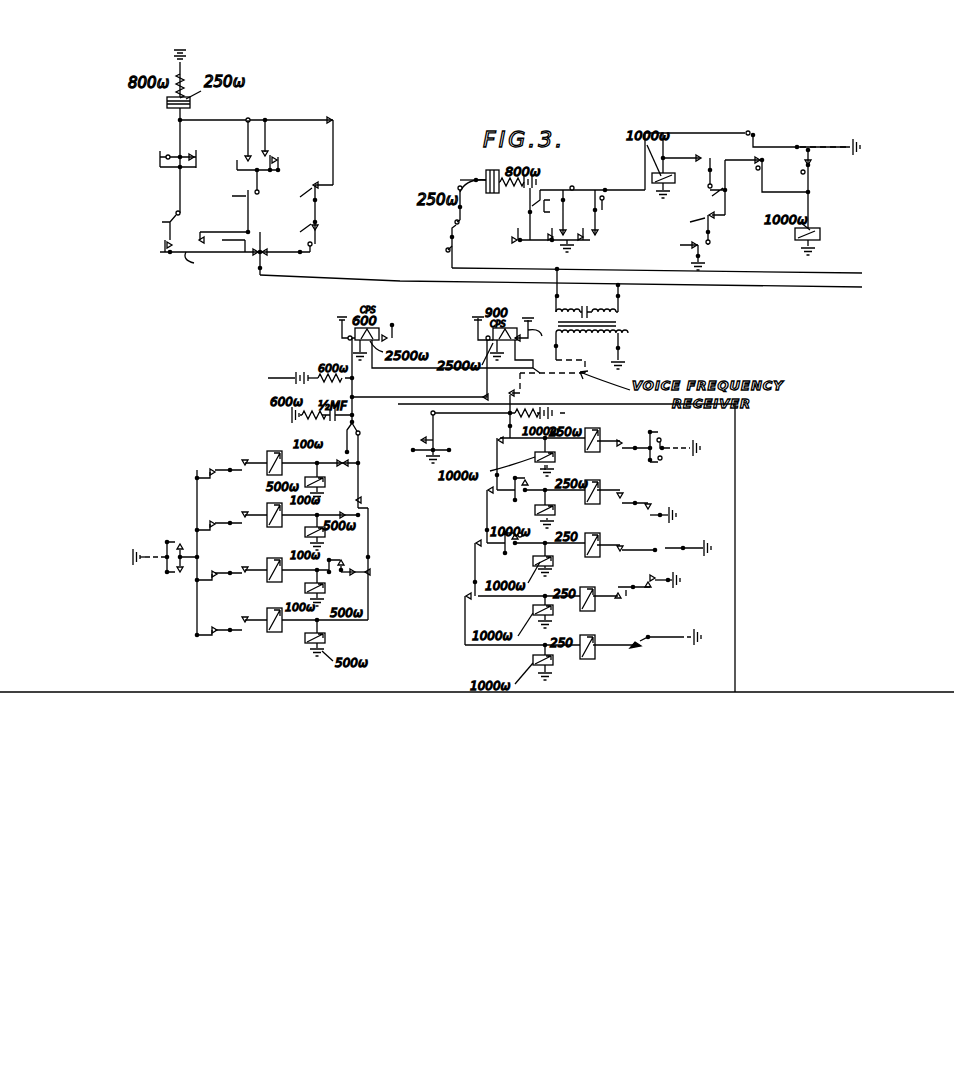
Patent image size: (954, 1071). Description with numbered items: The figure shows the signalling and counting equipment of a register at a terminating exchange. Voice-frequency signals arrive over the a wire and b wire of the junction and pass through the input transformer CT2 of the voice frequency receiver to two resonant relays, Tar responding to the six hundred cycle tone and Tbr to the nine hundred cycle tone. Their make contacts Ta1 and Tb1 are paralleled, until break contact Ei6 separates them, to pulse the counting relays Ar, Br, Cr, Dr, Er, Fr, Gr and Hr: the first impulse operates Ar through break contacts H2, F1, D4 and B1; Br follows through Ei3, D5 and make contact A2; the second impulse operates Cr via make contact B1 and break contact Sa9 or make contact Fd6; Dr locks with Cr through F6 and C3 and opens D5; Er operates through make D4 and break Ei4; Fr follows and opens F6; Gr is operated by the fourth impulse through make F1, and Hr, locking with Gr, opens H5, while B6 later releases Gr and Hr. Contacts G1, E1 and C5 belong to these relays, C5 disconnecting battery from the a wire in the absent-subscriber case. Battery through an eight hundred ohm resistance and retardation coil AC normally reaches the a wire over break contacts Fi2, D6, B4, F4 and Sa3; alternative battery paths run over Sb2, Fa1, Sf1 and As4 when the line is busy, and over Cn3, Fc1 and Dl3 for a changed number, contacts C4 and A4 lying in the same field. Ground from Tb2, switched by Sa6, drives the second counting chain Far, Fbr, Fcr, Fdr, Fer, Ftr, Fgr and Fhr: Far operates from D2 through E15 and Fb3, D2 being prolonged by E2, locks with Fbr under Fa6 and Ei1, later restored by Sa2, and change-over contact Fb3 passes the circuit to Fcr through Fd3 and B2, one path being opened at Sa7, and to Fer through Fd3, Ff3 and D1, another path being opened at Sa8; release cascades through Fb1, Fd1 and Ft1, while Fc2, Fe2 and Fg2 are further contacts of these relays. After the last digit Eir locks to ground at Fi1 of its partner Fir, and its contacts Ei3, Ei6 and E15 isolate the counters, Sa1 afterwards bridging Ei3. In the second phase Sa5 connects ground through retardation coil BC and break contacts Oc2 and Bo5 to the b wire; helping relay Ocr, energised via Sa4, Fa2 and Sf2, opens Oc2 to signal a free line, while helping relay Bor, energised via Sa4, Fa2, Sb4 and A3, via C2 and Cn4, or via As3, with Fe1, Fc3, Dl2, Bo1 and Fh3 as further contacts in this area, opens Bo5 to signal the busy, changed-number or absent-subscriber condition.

The retardation coil AC is at (191, 104).
The contact of changed-number relay Cn3 is at (155, 160).
The contact of relay Cr C5 is at (204, 162).
The make contact of busy relay Sb2 is at (242, 146).
The contact of relay C C4 is at (279, 146).
The contact of relay A A4 is at (287, 162).
The break contact of relay Fir Fi2 is at (344, 149).
The make contact of relay Far Fa1 is at (233, 201).
The break contact of relay Dr D6 is at (307, 196).
The break contact of relay Br B4 is at (300, 222).
The break contact of relay Fr F4 is at (296, 254).
The change-over contact of phase relay Sa3 is at (262, 252).
The contact of relay Sf Sf1 is at (223, 242).
The contact of relay As As4 is at (198, 264).
The make contact of relay Fcr Fc1 is at (150, 224).
The break contact of relay Dlr Dl3 is at (191, 248).
The a wire of the junction a is at (569, 286).
The b wire of the junction b is at (665, 269).
The make contact of phase relay Sa5 is at (466, 172).
The retardation coil BC is at (491, 193).
The break contact of relay Ocr Oc2 is at (648, 192).
The break contact of relay Bor Bo5 is at (470, 252).
The make contact of absent-subscriber relay As3 is at (522, 214).
The make contact of changed-number relay Cn4 is at (552, 212).
The contact of relay Dl Dl2 is at (590, 212).
The contact of relay Fe Fe1 is at (509, 234).
The make contact of relay Cr C2 is at (543, 238).
The contact of relay Fc Fc3 is at (576, 240).
The helping relay Bor is at (678, 165).
The make contact of relay Ar A3 is at (707, 163).
The make contact of busy relay Sb4 is at (723, 186).
The make contact of relay Far Fa2 is at (694, 228).
The make contact of phase relay Sa4 is at (682, 254).
The contact of relay Bo Bo1 is at (803, 134).
The make contact of free-line relay Sf2 is at (783, 175).
The helping relay Ocr is at (824, 223).
The input transformer CT2 is at (609, 332).
The resonant relay Tar is at (338, 334).
The make contact of relay Tar Ta1 is at (336, 336).
The resonant relay Tbr is at (480, 344).
The make contact of relay Tbr Tb1 is at (480, 330).
The make contact of relay Tbr Tb2 is at (532, 339).
The break contact of relay Eir Ei6 is at (419, 372).
The contact of phase relay Sa6 is at (529, 413).
The contact of relay Hr H2 is at (361, 462).
The break contact of relay Eir E15 is at (454, 430).
The make contact of relay Er E2 is at (407, 449).
The make contact of relay Dr D2 is at (442, 458).
The change-over contact of relay Fbr Fb3 is at (523, 456).
The counting relay Fbr is at (593, 431).
The counting relay Far is at (527, 457).
The make contact of relay Br B2 is at (534, 474).
The contact of relay Fdr Fd3 is at (480, 508).
The contact of phase relay Sa7 is at (510, 495).
The counting relay Fdr is at (589, 483).
The counting relay Fcr is at (524, 509).
The break contact of relay Ffr Ff3 is at (465, 562).
The contact of phase relay Sa8 is at (500, 550).
The make contact of relay Dr D1 is at (529, 536).
The counting relay Ftr is at (589, 536).
The counting relay Fer is at (524, 560).
The contact of relay Fh Fh3 is at (510, 614).
The counting relay Fhr is at (585, 590).
The counting relay Fgr is at (524, 612).
The relay Eir is at (586, 638).
The relay Fir is at (521, 662).
The contact of relay Far Fa6 is at (623, 437).
The contact of phase relay Sa2 is at (652, 439).
The break contact of relay Eir Ei1 is at (650, 460).
The contact of relay Fc Fc2 is at (624, 498).
The contact of relay Fbr Fb1 is at (666, 512).
The contact of relay Fe Fe2 is at (627, 554).
The contact of relay Fdr Fd1 is at (688, 544).
The contact of relay Ffr Ft1 is at (653, 577).
The contact of relay Fg Fg2 is at (622, 599).
The contact of relay Fir Fi1 is at (647, 634).
The break contact of relay Br B6 is at (207, 468).
The contact of relay G G1 is at (244, 457).
The counting relay Hr is at (276, 455).
The contact of relay Fr F1 is at (321, 454).
The counting relay Gr is at (326, 481).
The break contact of relay Hr H5 is at (205, 526).
The contact of relay E E1 is at (244, 511).
The counting relay Fr is at (275, 506).
The break contact of relay Eir Ei4 is at (320, 509).
The contact of relay Dr D4 is at (370, 558).
The counting relay Er is at (325, 533).
The contact of phase relay Sa1 is at (170, 542).
The break contact of relay Eir Ei3 is at (156, 573).
The break contact of relay Fr F6 is at (214, 573).
The make contact of relay Cr C3 is at (246, 563).
The counting relay Dr is at (277, 561).
The make contact of relay Fdr Fd6 is at (343, 559).
The contact of relay Br B1 is at (379, 565).
The break contact of phase relay Sa9 is at (354, 580).
The counting relay Cr is at (326, 588).
The break contact of relay Dr D5 is at (197, 636).
The make contact of relay Ar A2 is at (241, 621).
The counting relay Br is at (276, 611).
The counting relay Ar is at (328, 638).